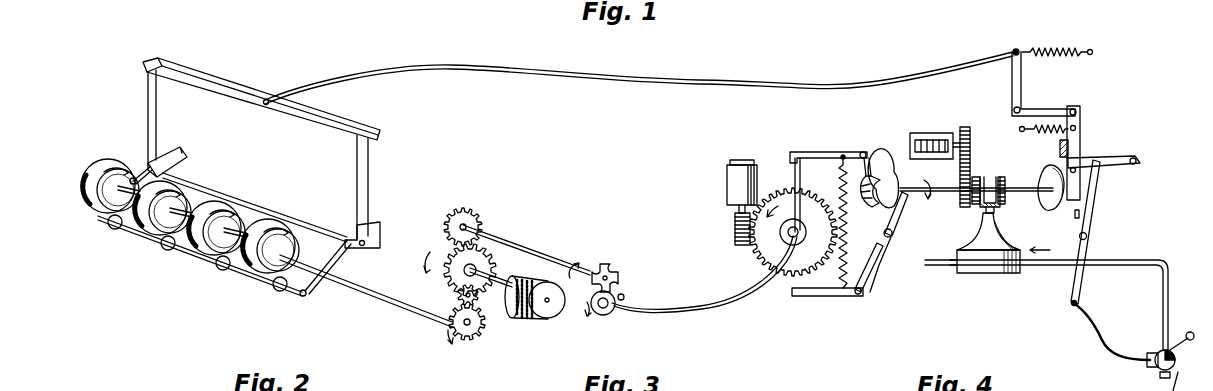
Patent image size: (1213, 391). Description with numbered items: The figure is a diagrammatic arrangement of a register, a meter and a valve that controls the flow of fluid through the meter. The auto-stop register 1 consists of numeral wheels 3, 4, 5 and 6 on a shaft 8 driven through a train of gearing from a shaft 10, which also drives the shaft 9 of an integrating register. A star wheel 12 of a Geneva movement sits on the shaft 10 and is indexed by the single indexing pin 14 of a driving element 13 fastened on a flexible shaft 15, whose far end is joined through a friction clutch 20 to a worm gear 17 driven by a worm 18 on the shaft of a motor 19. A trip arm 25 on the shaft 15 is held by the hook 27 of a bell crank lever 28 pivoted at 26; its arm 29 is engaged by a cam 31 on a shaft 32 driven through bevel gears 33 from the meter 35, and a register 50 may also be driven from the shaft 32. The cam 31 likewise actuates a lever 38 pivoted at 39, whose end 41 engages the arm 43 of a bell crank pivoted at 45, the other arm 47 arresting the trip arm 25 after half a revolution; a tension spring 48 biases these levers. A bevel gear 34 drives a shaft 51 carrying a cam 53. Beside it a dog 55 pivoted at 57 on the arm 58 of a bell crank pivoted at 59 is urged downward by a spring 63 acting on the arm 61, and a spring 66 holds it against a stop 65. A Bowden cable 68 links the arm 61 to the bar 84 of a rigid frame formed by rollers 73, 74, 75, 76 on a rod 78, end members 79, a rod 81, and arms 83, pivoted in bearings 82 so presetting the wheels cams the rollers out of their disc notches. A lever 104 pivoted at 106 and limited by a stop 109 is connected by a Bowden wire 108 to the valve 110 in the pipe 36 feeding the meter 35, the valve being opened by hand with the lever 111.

The auto-stop register 1 is at (198, 276).
The numeral wheel 3 is at (276, 215).
The numeral wheel 4 is at (216, 211).
The numeral wheel 5 is at (180, 193).
The numeral wheel 6 is at (94, 166).
The shaft 8 is at (354, 284).
The shaft 9 is at (500, 291).
The shaft 10 is at (527, 253).
The star wheel 12 is at (608, 265).
The driving element 13 is at (606, 313).
The indexing pin 14 is at (625, 297).
The flexible shaft 15 is at (703, 312).
The worm gear 17 is at (787, 290).
The worm 18 is at (732, 227).
The motor 19 is at (726, 183).
The friction clutch 20 is at (800, 241).
The trip arm 25 is at (801, 172).
The pivot 26 is at (866, 151).
The hook 27 is at (789, 155).
The bell crank lever 28 is at (843, 150).
The arm 29 is at (871, 166).
The cam 31 is at (886, 174).
The shaft 32 is at (906, 185).
The bevel gears 33 is at (976, 178).
The bevel gear 34 is at (1003, 178).
The meter 35 is at (979, 274).
The pipe 36 is at (1155, 262).
The lever 38 is at (904, 227).
The pivot 39 is at (888, 251).
The end of lever 41 is at (877, 268).
The arm 43 is at (862, 255).
The pivot 45 is at (860, 298).
The arm 47 is at (799, 298).
The tension spring 48 is at (841, 296).
The register 50 is at (940, 133).
The shaft 51 is at (1040, 183).
The cam 53 is at (1050, 212).
The dog 55 is at (1082, 141).
The pivot 57 is at (1077, 110).
The arm 58 is at (1033, 108).
The pivot 59 is at (1013, 109).
The arm 61 is at (1011, 79).
The spring 63 is at (1061, 48).
The stop 65 is at (1059, 152).
The spring 66 is at (1019, 129).
The Bowden cable 68 is at (677, 76).
The roller 73 is at (279, 292).
The roller 74 is at (222, 271).
The roller 75 is at (163, 251).
The roller 76 is at (111, 230).
The rod 78 is at (258, 290).
The end members 79 is at (138, 168).
The rod 81 is at (294, 215).
The bearings 82 is at (185, 160).
The arms 83 is at (158, 118).
The bar 84 is at (211, 77).
The lever 104 is at (1090, 223).
The pivot 106 is at (1088, 237).
The Bowden wire 108 is at (1115, 362).
The stop 109 is at (1081, 213).
The valve 110 is at (1149, 345).
The lever 111 is at (1187, 361).